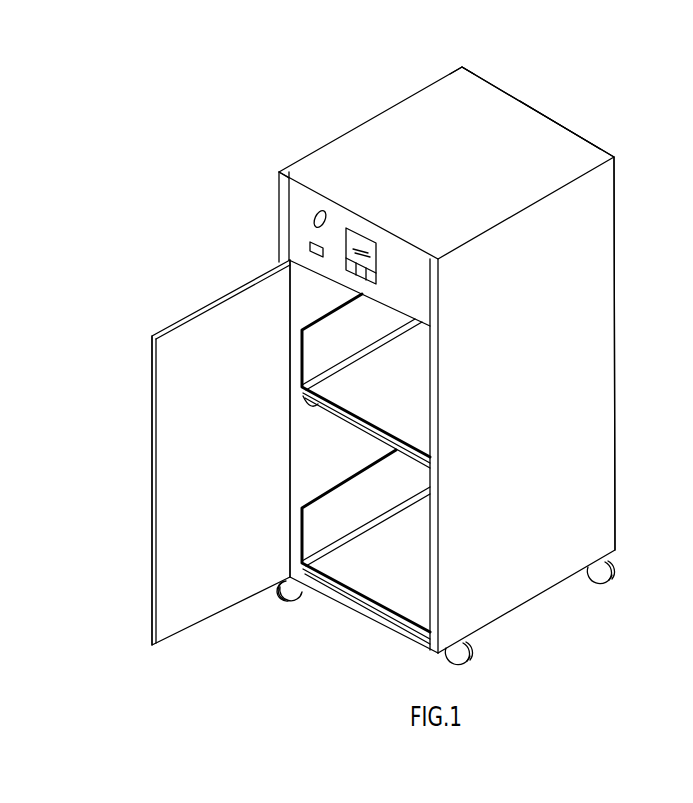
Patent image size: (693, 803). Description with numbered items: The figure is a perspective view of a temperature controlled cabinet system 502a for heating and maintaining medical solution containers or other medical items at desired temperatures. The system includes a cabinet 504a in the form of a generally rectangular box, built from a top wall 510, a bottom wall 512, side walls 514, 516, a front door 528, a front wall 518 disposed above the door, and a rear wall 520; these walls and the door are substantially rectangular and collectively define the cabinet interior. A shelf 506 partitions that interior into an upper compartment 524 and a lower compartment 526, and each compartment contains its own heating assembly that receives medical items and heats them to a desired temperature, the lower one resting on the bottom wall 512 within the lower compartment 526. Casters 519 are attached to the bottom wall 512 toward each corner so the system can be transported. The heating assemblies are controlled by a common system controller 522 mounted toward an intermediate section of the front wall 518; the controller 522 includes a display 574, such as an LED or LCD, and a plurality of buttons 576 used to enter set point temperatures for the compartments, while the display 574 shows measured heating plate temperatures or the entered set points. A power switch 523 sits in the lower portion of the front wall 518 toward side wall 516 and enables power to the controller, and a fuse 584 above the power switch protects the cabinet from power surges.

The temperature controlled cabinet system 502a is at (480, 62).
The cabinet 504a is at (556, 109).
The shelf 506 is at (305, 400).
The top wall 510 is at (404, 110).
The bottom wall 512 is at (350, 594).
The side wall 514 is at (612, 258).
The side wall 516 is at (318, 147).
The front wall 518 is at (392, 241).
The casters 519 is at (467, 638).
The rear wall 520 is at (573, 145).
The system controller 522 is at (364, 220).
The power switch 523 is at (296, 249).
The upper compartment 524 is at (281, 274).
The lower compartment 526 is at (296, 455).
The front door 528 is at (152, 388).
The display 574 is at (377, 260).
The buttons 576 is at (378, 284).
The fuse 584 is at (320, 209).